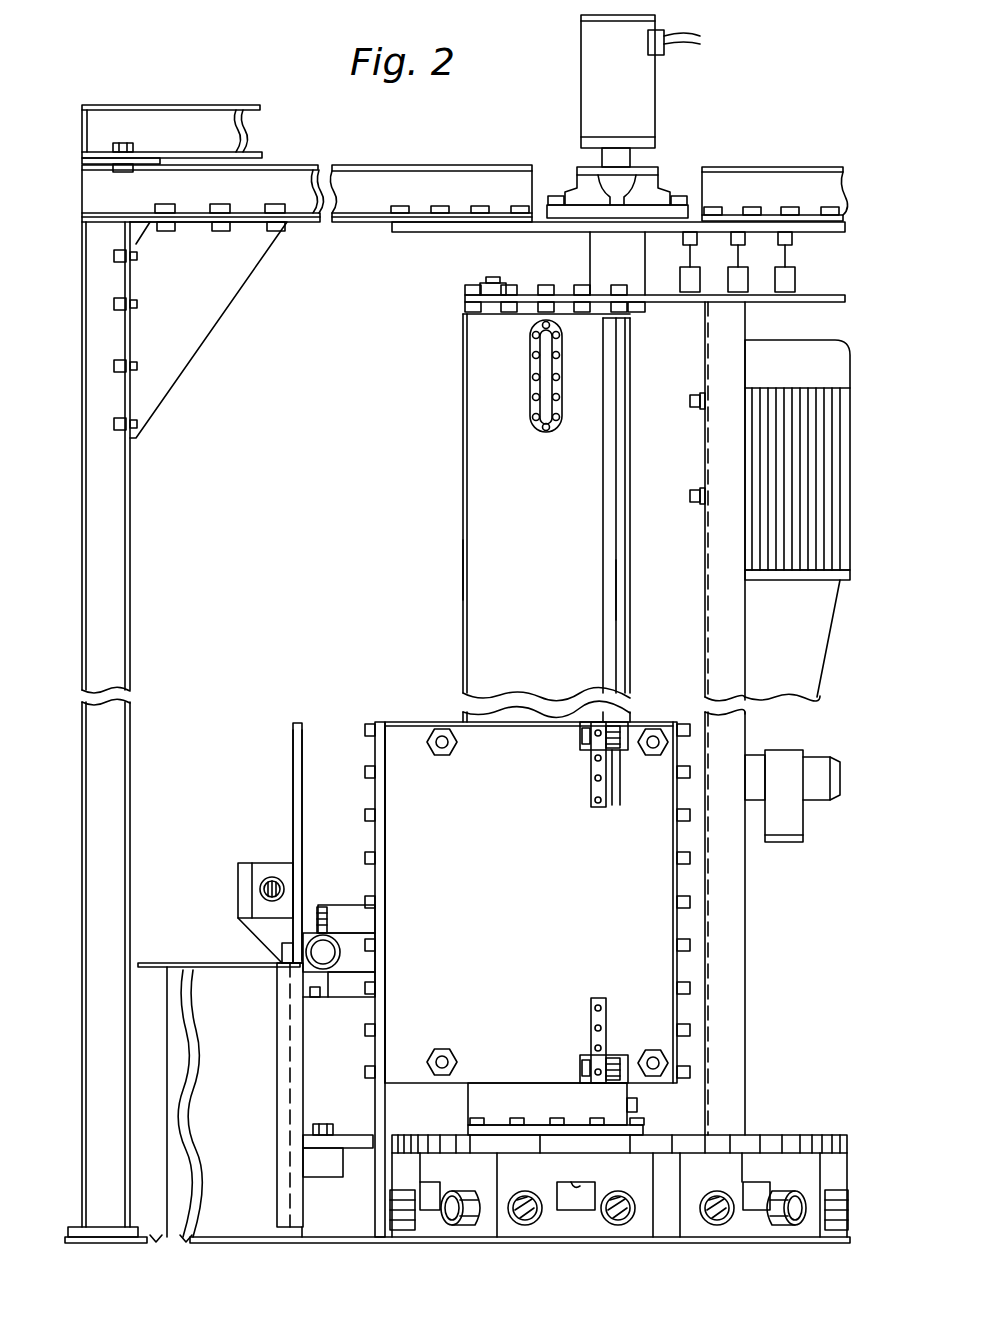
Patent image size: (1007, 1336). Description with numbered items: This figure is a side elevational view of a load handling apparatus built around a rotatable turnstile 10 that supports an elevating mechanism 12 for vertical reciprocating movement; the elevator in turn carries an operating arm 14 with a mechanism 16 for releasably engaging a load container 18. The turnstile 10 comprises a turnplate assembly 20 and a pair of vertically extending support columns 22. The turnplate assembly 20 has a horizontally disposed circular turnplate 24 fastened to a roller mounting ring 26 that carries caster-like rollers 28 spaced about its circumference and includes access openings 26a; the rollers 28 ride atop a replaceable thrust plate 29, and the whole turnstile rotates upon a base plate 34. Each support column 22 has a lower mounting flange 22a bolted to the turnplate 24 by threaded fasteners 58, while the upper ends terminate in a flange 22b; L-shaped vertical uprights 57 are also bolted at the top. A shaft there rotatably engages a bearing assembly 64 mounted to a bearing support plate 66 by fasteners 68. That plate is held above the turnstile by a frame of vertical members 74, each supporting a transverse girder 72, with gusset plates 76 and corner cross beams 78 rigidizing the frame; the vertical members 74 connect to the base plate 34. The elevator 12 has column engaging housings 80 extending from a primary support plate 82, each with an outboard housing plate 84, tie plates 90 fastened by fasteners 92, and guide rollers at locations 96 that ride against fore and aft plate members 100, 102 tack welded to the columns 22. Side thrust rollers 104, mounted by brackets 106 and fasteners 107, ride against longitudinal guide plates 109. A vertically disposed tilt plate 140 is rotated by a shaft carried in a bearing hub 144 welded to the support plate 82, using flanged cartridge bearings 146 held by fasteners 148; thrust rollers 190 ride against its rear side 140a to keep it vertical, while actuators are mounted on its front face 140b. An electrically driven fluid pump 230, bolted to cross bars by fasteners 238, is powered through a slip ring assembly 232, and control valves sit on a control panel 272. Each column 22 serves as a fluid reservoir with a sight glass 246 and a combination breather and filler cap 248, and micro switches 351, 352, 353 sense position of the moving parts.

The turnstile 10 is at (330, 532).
The elevating mechanism 12 is at (342, 636).
The operating arm 14 is at (283, 832).
The mechanism for releasably engaging a load container 16 is at (245, 868).
The load container 18 is at (228, 978).
The turnplate assembly 20 is at (762, 1126).
The support column 22 is at (465, 482).
The mounting flange 22a is at (645, 1128).
The flange 22b is at (465, 298).
The turnplate 24 is at (790, 1138).
The roller mounting ring 26 is at (672, 1202).
The access openings 26a is at (575, 1184).
The rollers 28 is at (530, 1192).
The thrust plate 29 is at (480, 1234).
The base plate 34 is at (232, 1237).
The vertical uprights 57 is at (745, 332).
The threaded fasteners 58 is at (560, 1116).
The bearing assembly 64 is at (660, 190).
The bearing support plate 66 is at (492, 232).
The fasteners 68 is at (553, 195).
The transverse girder 72 is at (426, 165).
The vertical members 74 is at (128, 588).
The gusset plates 76 is at (198, 342).
The corner cross beams 78 is at (138, 106).
The column engaging housing 80 is at (416, 722).
The primary support plate 82 is at (379, 722).
The outboard housing plate 84 is at (542, 926).
The tie plates 90 is at (682, 724).
The fasteners 92 is at (680, 942).
The guide roller locations 96 is at (449, 752).
The fore plate member 100 is at (465, 575).
The aft plate member 102 is at (628, 512).
The side thrust rollers 104 is at (620, 790).
The brackets 106 is at (594, 760).
The fasteners 107 is at (594, 760).
The longitudinal guide plates 109 is at (605, 588).
The tilt plate 140 is at (298, 722).
The rear side of tilt plate 140a is at (303, 758).
The front face of tilt plate 140b is at (293, 746).
The bearing hub 144 is at (352, 905).
The flanged cartridge bearings 146 is at (315, 996).
The fasteners 148 is at (316, 1000).
The thrust rollers 190 is at (322, 935).
The fluid pump 230 is at (780, 676).
The slip ring assembly 232 is at (655, 78).
The fasteners 238 is at (690, 402).
The sight glass 246 is at (545, 384).
The combination breather and filler cap 248 is at (488, 284).
The control panel 272 is at (782, 830).
The micro switch 351 is at (688, 285).
The micro switch 352 is at (735, 285).
The micro switch 353 is at (790, 285).